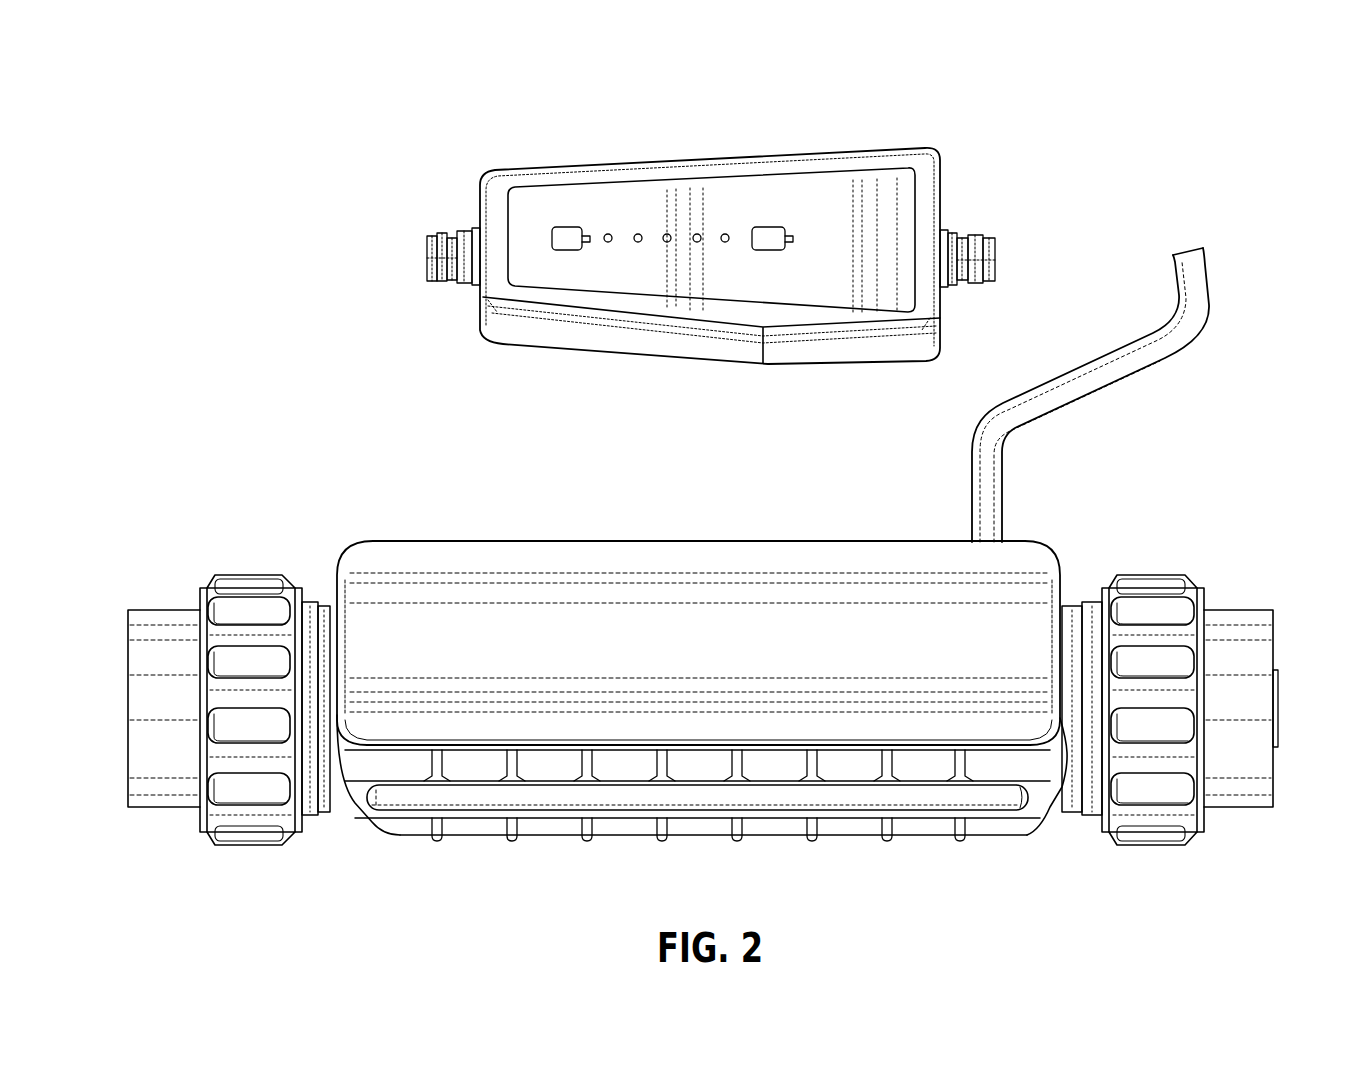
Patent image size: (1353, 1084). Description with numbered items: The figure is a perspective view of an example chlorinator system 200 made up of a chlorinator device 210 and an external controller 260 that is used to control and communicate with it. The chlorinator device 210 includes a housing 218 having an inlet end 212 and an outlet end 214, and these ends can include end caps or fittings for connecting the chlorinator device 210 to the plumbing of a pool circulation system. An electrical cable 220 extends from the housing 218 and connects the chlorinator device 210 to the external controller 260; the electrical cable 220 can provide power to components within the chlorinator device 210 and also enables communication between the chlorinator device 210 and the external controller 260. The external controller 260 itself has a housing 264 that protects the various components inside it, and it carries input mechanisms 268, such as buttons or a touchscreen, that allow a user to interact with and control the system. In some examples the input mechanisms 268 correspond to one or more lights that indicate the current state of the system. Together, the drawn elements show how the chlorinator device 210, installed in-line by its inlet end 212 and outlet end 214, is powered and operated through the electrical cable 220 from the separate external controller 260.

The chlorinator system 200 is at (220, 258).
The chlorinator device 210 is at (347, 512).
The inlet end 212 is at (1237, 623).
The outlet end 214 is at (163, 632).
The housing 218 is at (588, 548).
The electrical cable 220 is at (1140, 357).
The external controller 260 is at (897, 114).
The housing 264 is at (927, 187).
The input mechanisms 268 is at (737, 250).